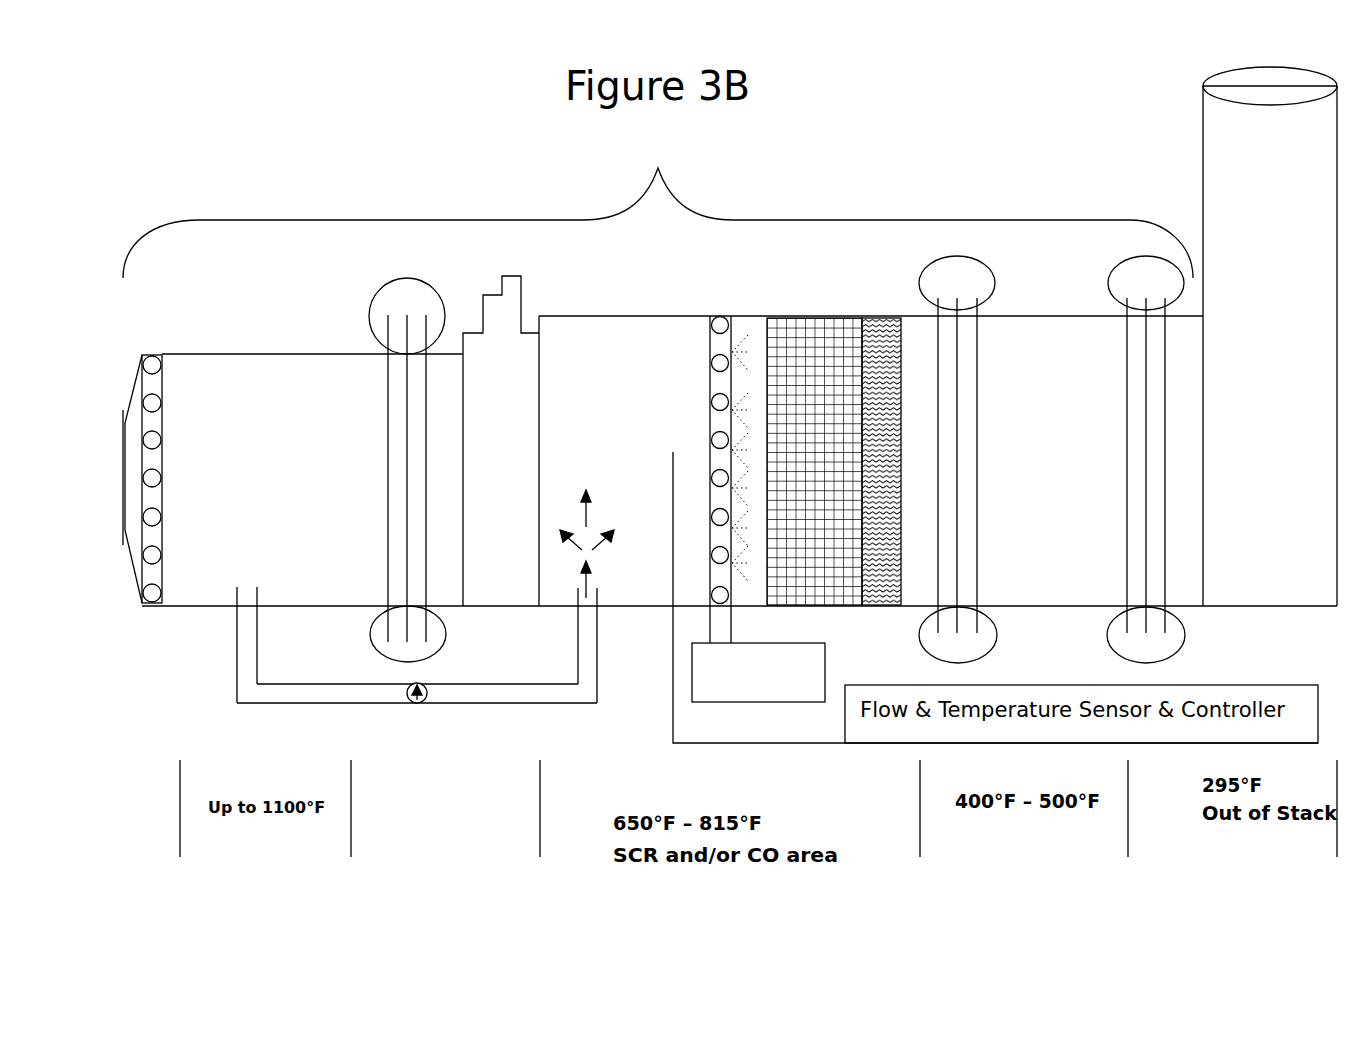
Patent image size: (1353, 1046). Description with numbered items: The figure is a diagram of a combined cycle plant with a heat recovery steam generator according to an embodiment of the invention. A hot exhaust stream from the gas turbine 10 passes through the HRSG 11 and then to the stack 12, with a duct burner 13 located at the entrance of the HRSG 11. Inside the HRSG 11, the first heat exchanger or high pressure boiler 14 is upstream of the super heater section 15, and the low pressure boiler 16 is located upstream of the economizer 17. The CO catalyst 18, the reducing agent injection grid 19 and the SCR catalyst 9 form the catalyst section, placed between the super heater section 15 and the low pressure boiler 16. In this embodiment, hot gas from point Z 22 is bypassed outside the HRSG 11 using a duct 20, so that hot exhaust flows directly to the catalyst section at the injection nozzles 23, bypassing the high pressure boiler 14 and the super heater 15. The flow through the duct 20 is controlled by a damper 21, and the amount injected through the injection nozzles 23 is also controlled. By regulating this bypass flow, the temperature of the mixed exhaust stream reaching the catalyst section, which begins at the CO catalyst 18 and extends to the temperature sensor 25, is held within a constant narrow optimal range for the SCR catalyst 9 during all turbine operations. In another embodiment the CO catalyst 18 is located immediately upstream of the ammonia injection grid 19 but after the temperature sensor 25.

The SCR catalyst 9 is at (814, 446).
The gas turbine 10 is at (111, 479).
The HRSG 11 is at (658, 207).
The stack 12 is at (1270, 336).
The duct burner 13 is at (152, 464).
The high pressure boiler 14 is at (407, 456).
The super heater section 15 is at (501, 428).
The low pressure boiler 16 is at (958, 447).
The economizer 17 is at (1146, 447).
The CO catalyst 18 is at (878, 446).
The reducing agent injection grid 19 is at (758, 509).
The duct 20 is at (417, 679).
The damper 21 is at (622, 712).
The point Z 22 is at (245, 612).
The injection nozzles 23 is at (590, 596).
The temperature sensor 25 is at (983, 574).